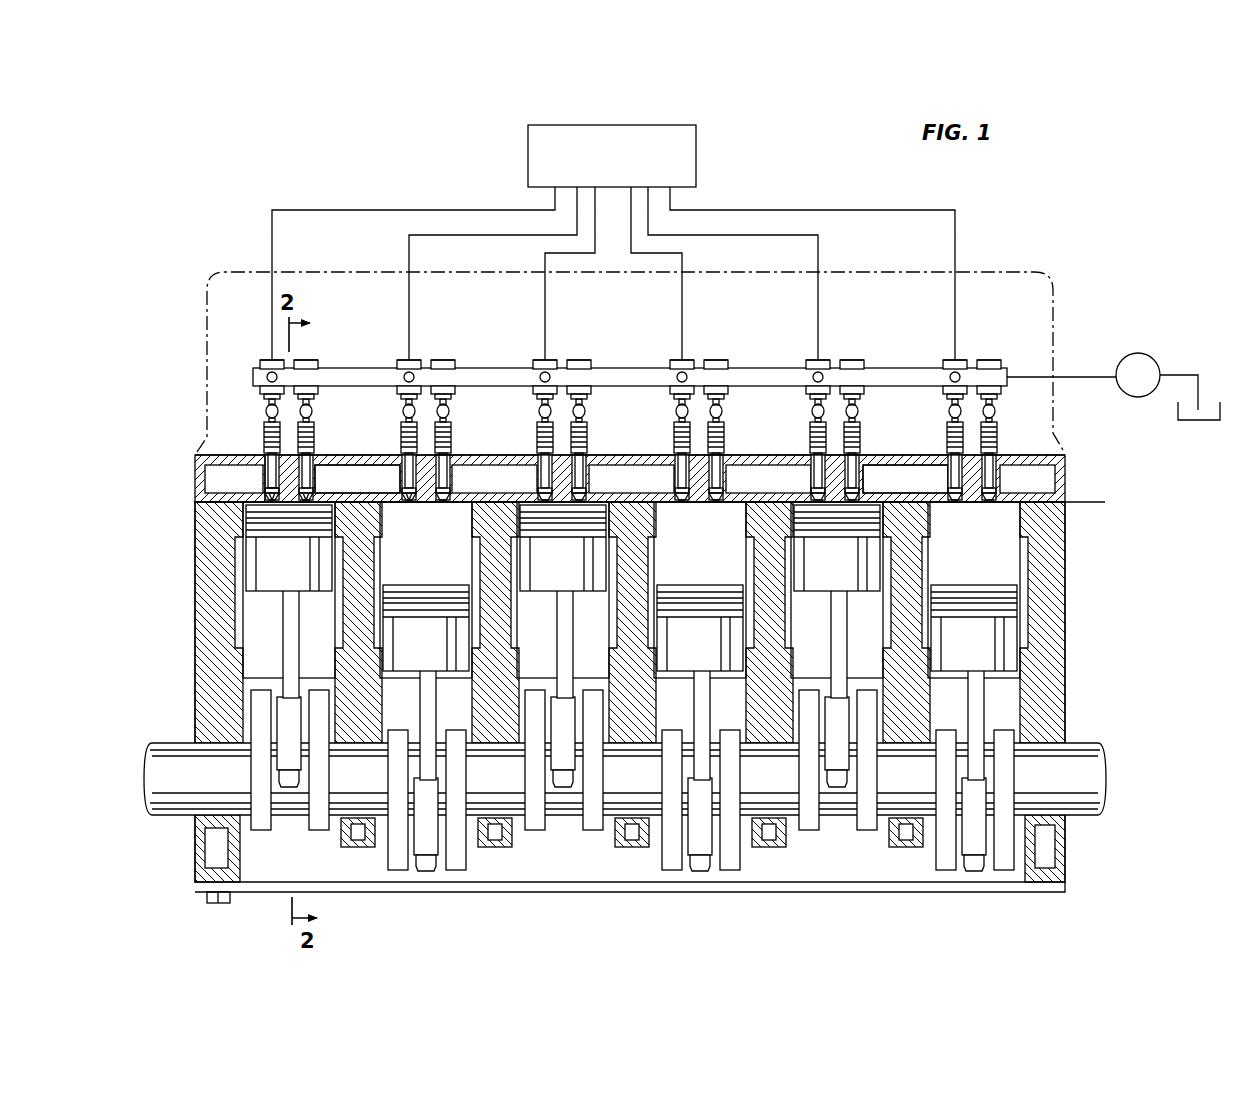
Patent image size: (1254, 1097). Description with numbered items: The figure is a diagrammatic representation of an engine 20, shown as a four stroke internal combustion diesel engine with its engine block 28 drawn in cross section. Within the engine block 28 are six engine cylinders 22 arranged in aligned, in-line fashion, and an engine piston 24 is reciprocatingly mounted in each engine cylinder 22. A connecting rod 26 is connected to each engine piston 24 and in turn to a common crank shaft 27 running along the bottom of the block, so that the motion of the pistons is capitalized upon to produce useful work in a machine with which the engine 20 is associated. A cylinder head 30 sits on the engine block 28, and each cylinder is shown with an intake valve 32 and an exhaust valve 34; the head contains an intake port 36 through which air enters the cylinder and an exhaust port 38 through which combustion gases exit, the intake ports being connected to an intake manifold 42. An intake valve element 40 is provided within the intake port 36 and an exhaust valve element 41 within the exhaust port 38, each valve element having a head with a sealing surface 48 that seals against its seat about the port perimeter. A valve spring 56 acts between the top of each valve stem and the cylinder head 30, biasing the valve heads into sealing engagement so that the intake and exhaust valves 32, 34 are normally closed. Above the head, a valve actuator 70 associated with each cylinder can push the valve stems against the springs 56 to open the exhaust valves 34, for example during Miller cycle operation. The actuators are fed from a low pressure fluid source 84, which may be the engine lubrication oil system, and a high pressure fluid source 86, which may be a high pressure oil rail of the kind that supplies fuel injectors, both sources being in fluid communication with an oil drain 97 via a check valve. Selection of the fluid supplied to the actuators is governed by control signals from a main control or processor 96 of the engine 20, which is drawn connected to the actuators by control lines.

The engine 20 is at (1090, 262).
The engine cylinder 22 is at (631, 590).
The engine piston 24 is at (262, 594).
The connecting rod 26 is at (283, 660).
The crank shaft 27 is at (178, 800).
The engine block 28 is at (200, 514).
The cylinder head 30 is at (1066, 481).
The intake valve 32 is at (310, 462).
The exhaust valve 34 is at (262, 468).
The intake port 36 is at (306, 503).
The exhaust port 38 is at (262, 494).
The intake valve element 40 is at (283, 500).
The exhaust valve element 41 is at (409, 504).
The intake manifold 42 is at (202, 457).
The sealing surface 48 is at (265, 490).
The valve spring 56 is at (270, 408).
The valve actuator 70 is at (270, 358).
The low pressure fluid source 84 is at (1140, 356).
The high pressure fluid source 86 is at (905, 376).
The main control or processor 96 is at (528, 151).
The oil drain 97 is at (1220, 410).